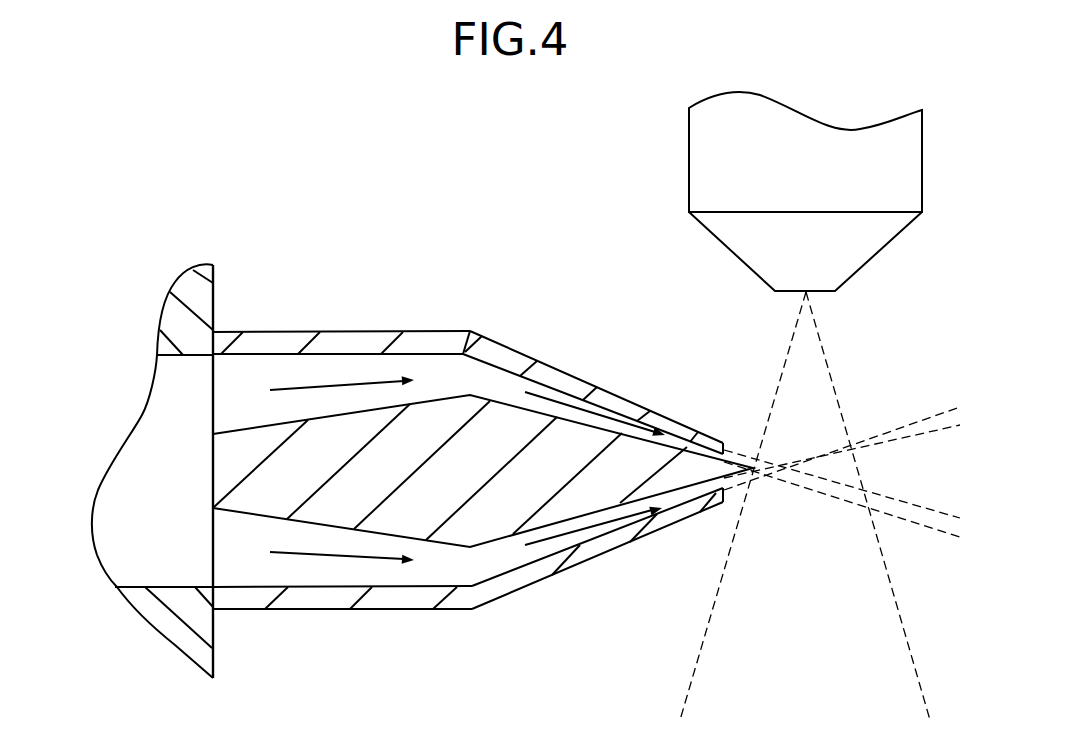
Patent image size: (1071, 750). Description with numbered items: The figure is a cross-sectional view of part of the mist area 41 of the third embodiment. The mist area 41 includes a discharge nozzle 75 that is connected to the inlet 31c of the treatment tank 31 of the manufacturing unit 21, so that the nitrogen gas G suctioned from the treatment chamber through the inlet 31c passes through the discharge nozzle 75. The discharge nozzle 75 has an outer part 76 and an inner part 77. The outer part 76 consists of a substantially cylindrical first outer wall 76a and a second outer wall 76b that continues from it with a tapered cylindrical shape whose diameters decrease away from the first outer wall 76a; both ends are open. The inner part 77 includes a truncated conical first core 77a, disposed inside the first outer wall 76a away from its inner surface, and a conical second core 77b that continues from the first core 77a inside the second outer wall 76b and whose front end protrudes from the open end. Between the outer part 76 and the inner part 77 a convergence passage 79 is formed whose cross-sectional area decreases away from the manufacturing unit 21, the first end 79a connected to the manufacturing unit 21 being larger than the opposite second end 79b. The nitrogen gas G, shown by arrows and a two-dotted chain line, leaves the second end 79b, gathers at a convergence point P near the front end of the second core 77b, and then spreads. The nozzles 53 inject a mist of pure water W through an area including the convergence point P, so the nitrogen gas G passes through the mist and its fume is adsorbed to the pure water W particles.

The mist area 41 is at (410, 184).
The manufacturing unit 21 is at (216, 266).
The treatment tank 31 is at (192, 283).
The inlet 31c is at (148, 432).
The discharge nozzle 75 is at (476, 328).
The outer part 76 is at (398, 332).
The first outer wall 76a is at (302, 340).
The second outer wall 76b is at (565, 380).
The inner part 77 is at (483, 548).
The first core 77a is at (255, 508).
The second core 77b is at (683, 457).
The convergence passage 79 is at (241, 362).
The first end 79a is at (213, 570).
The second end 79b is at (730, 453).
The nozzles 53 is at (689, 157).
The pure water W is at (823, 352).
The convergence point P is at (789, 486).
The nitrogen gas G is at (358, 383).